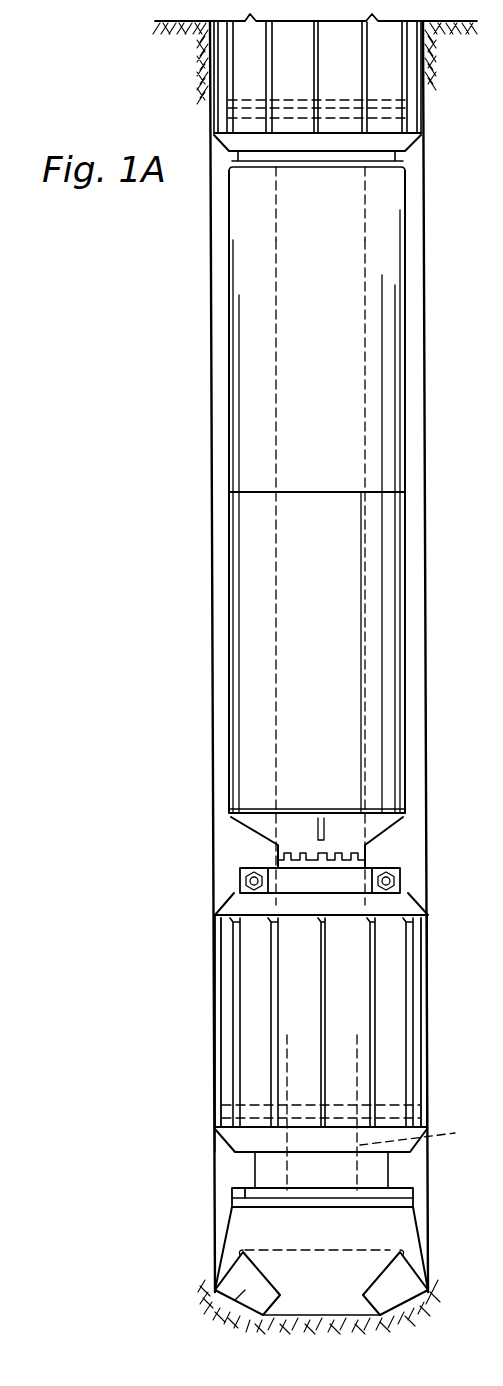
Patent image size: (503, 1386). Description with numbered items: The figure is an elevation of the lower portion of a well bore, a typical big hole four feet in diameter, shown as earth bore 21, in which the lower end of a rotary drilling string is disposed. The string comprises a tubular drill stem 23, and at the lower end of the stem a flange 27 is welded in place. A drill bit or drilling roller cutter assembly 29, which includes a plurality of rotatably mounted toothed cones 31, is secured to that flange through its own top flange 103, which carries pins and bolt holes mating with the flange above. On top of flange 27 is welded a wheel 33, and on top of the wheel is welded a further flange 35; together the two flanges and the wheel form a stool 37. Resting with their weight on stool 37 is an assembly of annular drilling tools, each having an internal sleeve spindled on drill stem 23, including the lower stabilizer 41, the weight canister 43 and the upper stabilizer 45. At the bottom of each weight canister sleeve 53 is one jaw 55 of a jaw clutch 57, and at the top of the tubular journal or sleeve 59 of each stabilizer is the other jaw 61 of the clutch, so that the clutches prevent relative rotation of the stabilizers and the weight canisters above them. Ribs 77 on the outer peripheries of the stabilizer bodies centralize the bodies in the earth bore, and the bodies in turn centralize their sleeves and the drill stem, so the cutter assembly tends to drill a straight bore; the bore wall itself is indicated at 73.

The earth bore 21 is at (215, 1145).
The tubular drill stem 23 is at (423, 1136).
The flange 27 is at (247, 1192).
The drill bit or drilling roller cutter assembly 29 is at (255, 1225).
The toothed cones 31 is at (235, 1300).
The wheel 33 is at (389, 1172).
The flange 35 is at (256, 1095).
The stool 37 is at (235, 1163).
The stabilizer 41 is at (283, 1033).
The weight canister 43 is at (229, 518).
The stabilizer 45 is at (196, 80).
The weight canister sleeve 53 is at (272, 745).
The jaw 55 is at (303, 855).
The jaw clutch 57 is at (371, 855).
The tubular journal or sleeve 59 is at (365, 905).
The jaw 61 is at (320, 858).
The borehole wall 73 is at (218, 553).
The ribs 77 is at (368, 990).
The top flange 103 is at (235, 1204).